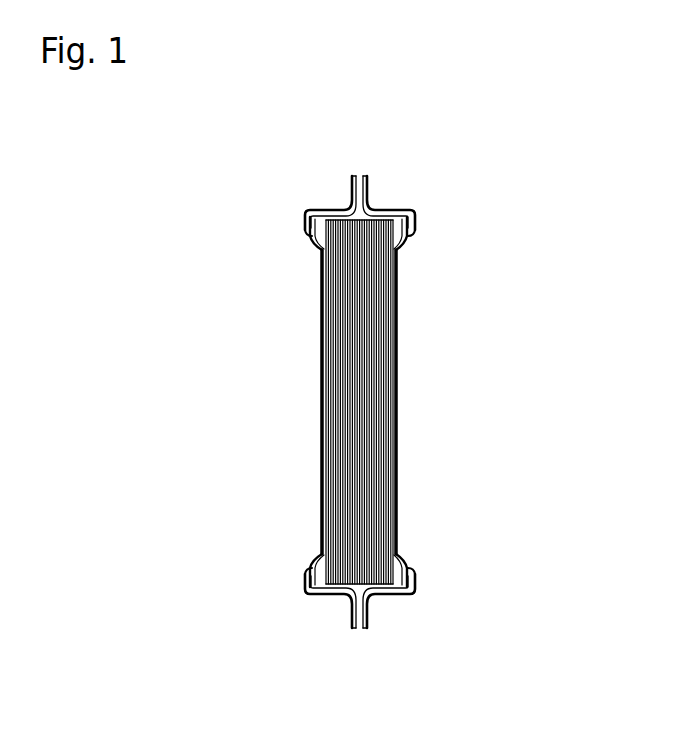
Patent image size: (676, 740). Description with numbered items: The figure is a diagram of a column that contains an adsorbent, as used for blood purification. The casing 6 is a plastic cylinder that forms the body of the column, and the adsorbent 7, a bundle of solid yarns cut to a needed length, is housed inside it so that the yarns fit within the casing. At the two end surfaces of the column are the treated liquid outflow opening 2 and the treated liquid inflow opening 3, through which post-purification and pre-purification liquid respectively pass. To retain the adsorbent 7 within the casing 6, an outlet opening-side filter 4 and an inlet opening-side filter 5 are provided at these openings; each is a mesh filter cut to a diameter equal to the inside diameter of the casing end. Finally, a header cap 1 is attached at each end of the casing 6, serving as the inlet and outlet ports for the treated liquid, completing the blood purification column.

The header cap 1 is at (307, 575).
The treated liquid outflow opening 2 is at (365, 182).
The treated liquid inflow opening 3 is at (365, 615).
The outlet opening-side filter 4 is at (413, 227).
The inlet opening-side filter 5 is at (408, 578).
The casing 6 is at (397, 331).
The adsorbent 7 is at (363, 432).